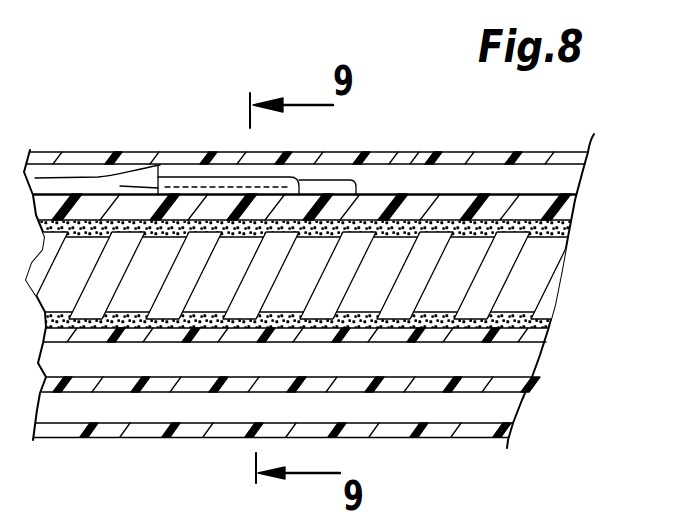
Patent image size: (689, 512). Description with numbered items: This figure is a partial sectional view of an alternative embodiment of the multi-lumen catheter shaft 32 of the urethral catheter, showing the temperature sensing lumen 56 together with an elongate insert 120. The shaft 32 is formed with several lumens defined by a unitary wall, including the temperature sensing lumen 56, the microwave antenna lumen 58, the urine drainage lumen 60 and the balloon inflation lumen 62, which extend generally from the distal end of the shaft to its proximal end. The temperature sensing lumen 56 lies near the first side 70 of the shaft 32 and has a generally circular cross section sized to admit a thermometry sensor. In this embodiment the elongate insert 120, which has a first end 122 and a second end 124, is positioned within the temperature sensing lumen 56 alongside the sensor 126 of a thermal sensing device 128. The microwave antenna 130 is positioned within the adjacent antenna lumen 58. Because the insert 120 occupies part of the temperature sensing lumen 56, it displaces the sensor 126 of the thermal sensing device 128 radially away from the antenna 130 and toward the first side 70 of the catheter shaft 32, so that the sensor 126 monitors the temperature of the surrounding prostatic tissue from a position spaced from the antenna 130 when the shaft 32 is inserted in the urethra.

The multi-lumen shaft 32 is at (56, 140).
The first side 70 is at (119, 153).
The thermal sensing device 128 is at (125, 187).
The first end 122 is at (166, 170).
The sensor 126 is at (212, 157).
The elongate insert 120 is at (357, 180).
The second end 124 is at (419, 153).
The microwave antenna 130 is at (453, 265).
The temperature sensing lumen 56 is at (548, 193).
The microwave antenna lumen 58 is at (520, 332).
The urine drainage lumen 60 is at (412, 358).
The balloon inflation lumen 62 is at (448, 400).